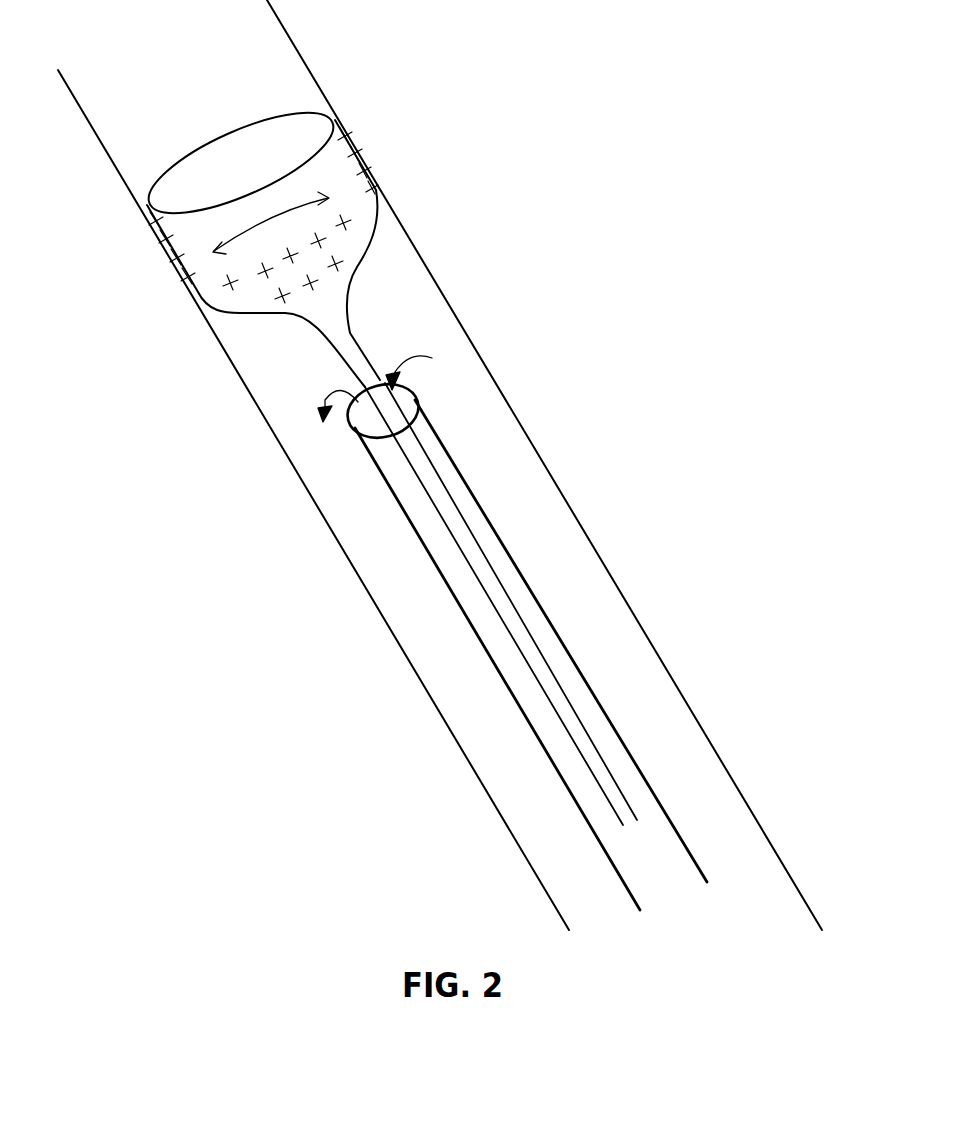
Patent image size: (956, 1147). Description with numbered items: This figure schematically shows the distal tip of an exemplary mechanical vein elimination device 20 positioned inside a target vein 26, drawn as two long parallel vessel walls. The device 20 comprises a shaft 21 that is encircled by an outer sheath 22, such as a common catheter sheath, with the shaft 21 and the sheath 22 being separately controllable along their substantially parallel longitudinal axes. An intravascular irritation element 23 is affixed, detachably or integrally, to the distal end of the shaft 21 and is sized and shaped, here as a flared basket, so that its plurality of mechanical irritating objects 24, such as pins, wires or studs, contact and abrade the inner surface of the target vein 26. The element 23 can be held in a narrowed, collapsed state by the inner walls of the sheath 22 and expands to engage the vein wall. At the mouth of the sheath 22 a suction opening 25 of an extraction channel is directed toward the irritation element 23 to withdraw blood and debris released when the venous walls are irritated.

The mechanical vein elimination device 20 is at (336, 205).
The shaft 21 is at (452, 510).
The sheath 22 is at (555, 627).
The intravascular irritation element 23 is at (347, 257).
The mechanical irritating objects 24 is at (357, 135).
The suction opening 25 is at (407, 385).
The target vein 26 is at (707, 737).